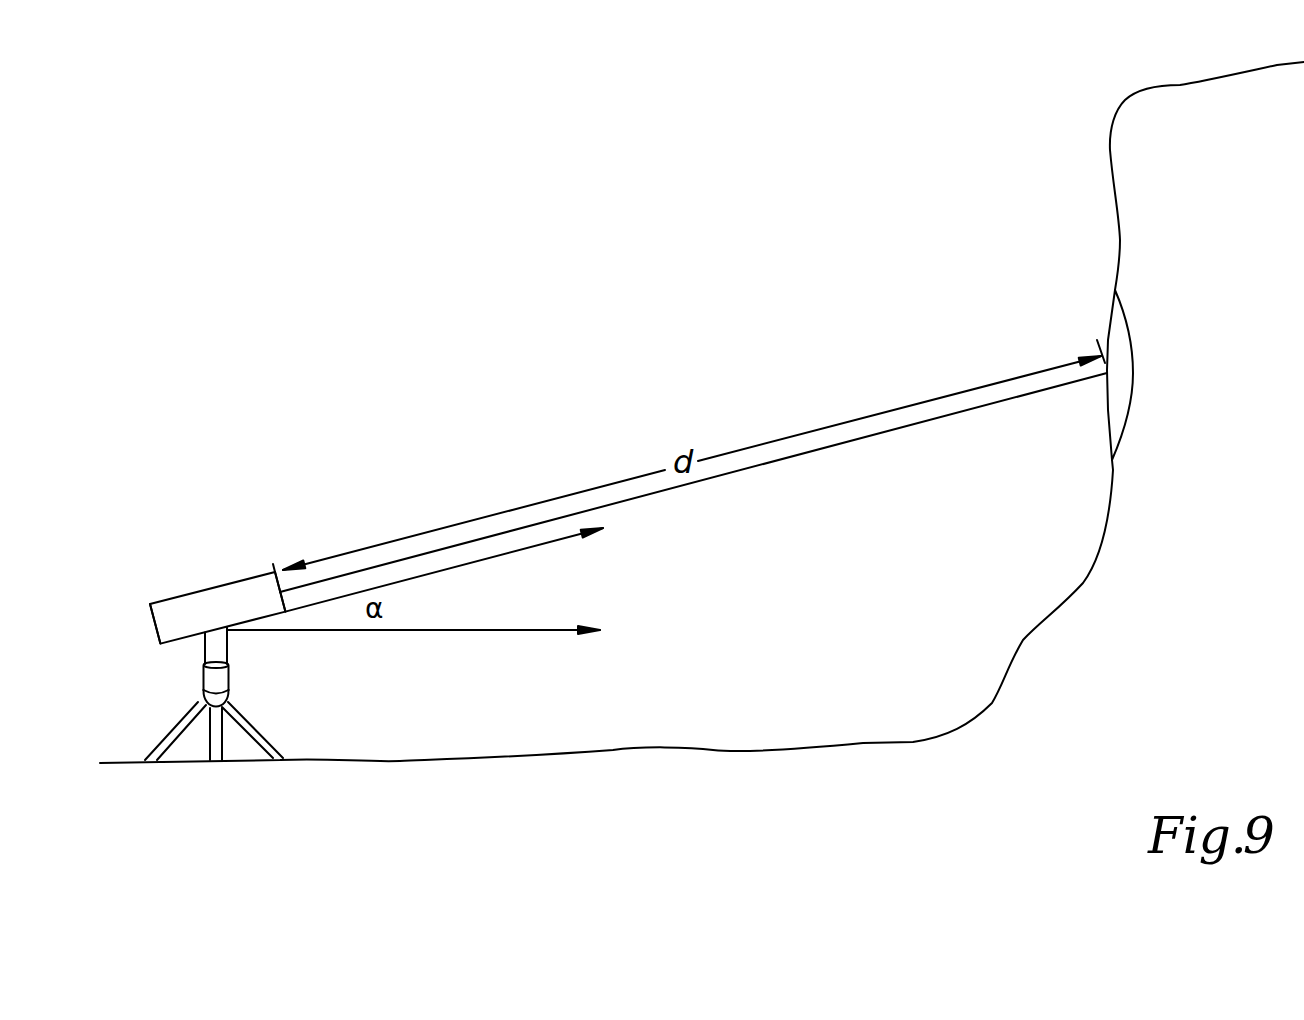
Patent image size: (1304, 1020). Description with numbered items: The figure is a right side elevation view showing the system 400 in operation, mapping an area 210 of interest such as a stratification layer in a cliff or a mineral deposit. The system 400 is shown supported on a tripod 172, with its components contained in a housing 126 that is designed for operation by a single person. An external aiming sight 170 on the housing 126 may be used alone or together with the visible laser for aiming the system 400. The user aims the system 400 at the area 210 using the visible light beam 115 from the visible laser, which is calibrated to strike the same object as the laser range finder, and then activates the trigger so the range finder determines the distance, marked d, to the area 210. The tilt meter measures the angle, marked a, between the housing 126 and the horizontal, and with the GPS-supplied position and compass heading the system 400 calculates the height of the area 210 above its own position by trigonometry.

The visible light beam 115 is at (812, 452).
The housing 126 is at (157, 637).
The external aiming sight 170 is at (152, 601).
The tripod 172 is at (268, 695).
The area of interest 210 is at (1132, 395).
The system 400 is at (212, 631).